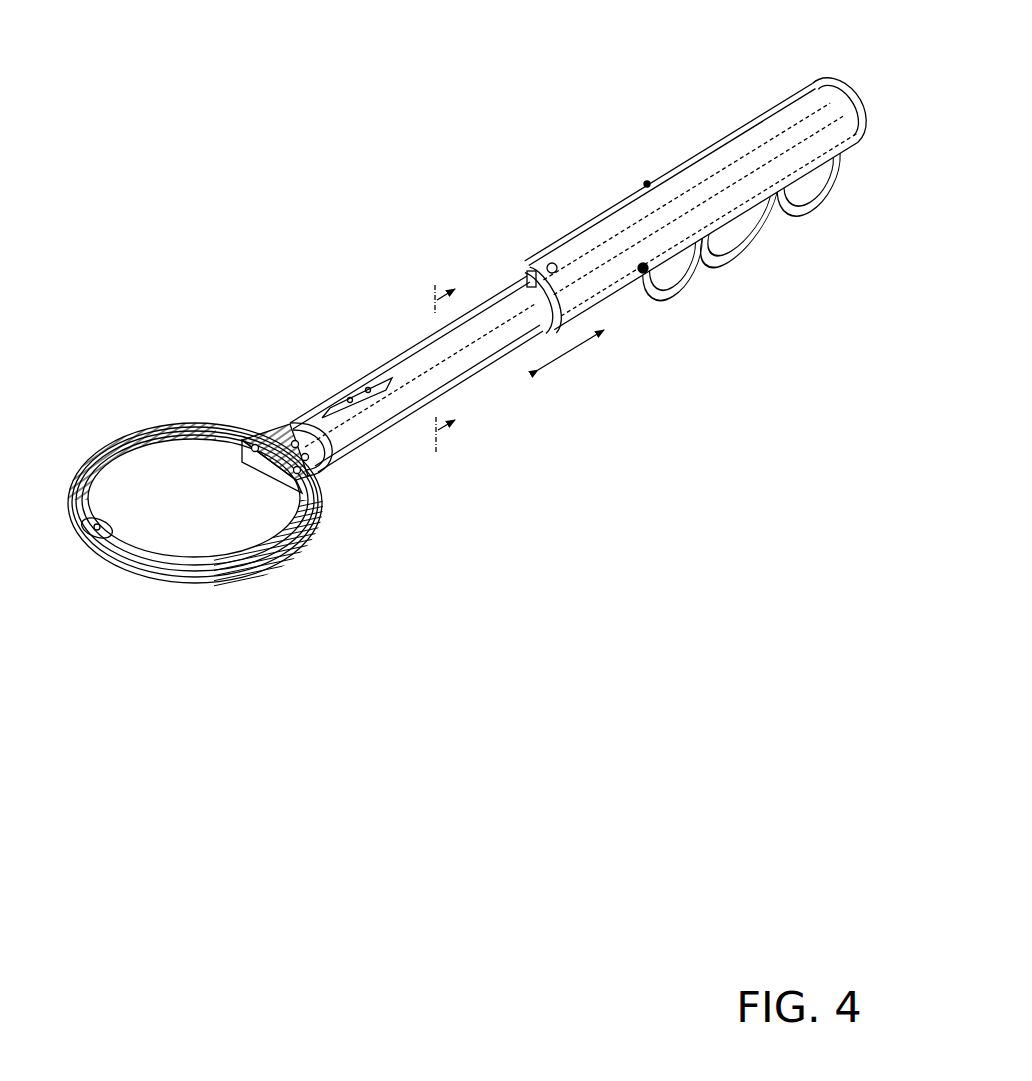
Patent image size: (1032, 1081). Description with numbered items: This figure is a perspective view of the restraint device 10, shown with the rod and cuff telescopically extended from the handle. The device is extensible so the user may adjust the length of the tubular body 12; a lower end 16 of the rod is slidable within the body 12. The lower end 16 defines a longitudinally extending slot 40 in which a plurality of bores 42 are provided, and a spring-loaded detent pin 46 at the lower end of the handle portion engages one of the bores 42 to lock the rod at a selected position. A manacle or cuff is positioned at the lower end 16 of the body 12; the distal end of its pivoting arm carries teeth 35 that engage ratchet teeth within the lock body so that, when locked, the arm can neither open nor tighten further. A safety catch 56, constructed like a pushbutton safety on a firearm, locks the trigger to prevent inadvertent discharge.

The restraint device 10 is at (531, 171).
The body 12 is at (688, 158).
The lower end 16 is at (388, 358).
The teeth 35 is at (197, 430).
The longitudinal slot 40 is at (355, 393).
The plurality of bores 42 is at (368, 393).
The spring-loaded detent pin 46 is at (546, 263).
The safety catch 56 is at (642, 272).